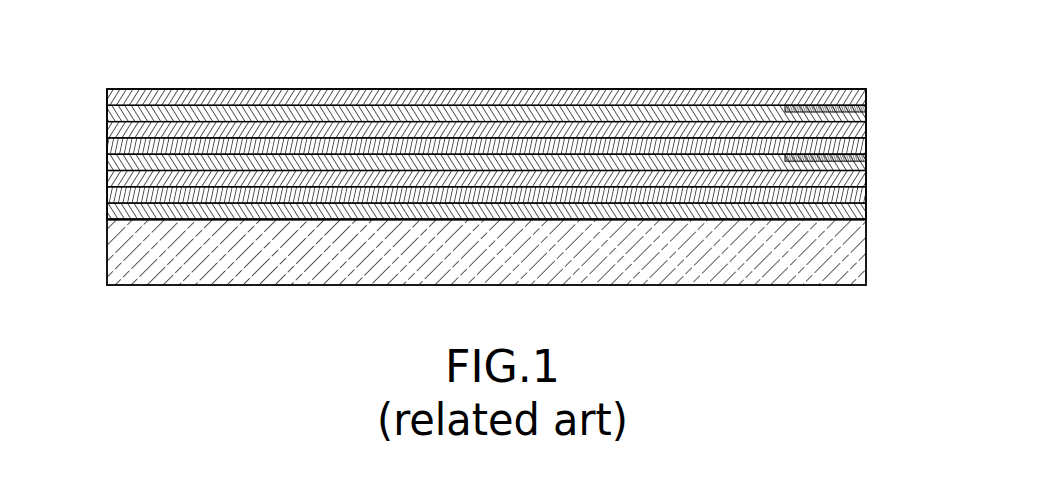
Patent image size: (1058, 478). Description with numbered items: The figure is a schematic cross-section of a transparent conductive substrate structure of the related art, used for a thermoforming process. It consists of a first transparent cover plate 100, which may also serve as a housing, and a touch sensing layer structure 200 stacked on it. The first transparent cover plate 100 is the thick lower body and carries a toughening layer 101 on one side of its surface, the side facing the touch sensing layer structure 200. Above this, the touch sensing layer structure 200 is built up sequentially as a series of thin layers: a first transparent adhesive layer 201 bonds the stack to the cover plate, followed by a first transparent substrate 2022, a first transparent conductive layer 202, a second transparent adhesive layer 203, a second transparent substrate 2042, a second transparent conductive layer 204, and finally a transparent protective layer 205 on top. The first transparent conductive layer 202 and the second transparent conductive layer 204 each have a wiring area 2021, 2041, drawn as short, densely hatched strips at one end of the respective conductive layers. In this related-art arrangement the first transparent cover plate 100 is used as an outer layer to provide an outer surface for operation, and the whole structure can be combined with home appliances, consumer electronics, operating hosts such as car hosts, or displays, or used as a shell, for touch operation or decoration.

The first transparent cover plate 100 is at (747, 270).
The toughening layer 101 is at (868, 219).
The touch sensing layer structure 200 is at (100, 90).
The first transparent adhesive layer 201 is at (868, 200).
The first transparent conductive layer 202 is at (868, 167).
The wiring area 2021 is at (868, 160).
The first transparent substrate 2022 is at (868, 184).
The second transparent adhesive layer 203 is at (868, 137).
The second transparent conductive layer 204 is at (759, 105).
The wiring area 2041 is at (827, 106).
The second transparent substrate 2042 is at (868, 113).
The transparent protective layer 205 is at (692, 90).